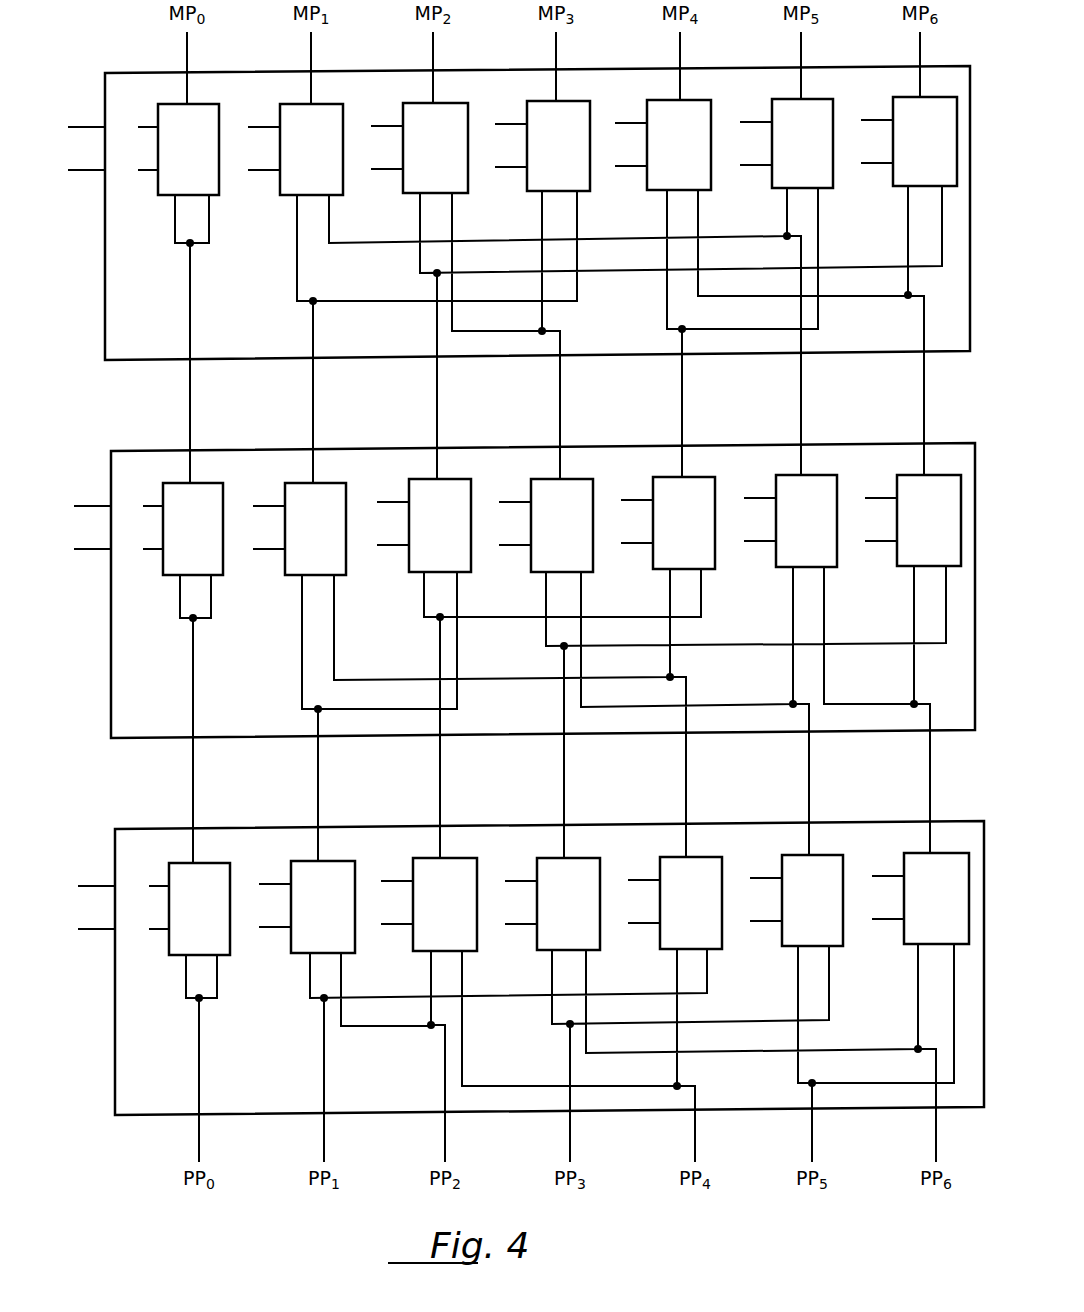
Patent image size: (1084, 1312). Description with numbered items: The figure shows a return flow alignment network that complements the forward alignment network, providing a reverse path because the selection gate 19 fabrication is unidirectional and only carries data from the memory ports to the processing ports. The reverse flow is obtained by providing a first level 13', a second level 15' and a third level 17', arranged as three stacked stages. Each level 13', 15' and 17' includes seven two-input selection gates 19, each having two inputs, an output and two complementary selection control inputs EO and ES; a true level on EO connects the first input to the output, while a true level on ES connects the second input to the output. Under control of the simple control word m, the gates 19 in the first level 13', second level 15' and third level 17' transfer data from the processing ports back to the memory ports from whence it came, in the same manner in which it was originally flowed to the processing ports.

The two-input selection gate 19 is at (916, 934).
The first level 13' is at (506, 213).
The second level 15' is at (510, 590).
The third level 17' is at (518, 968).